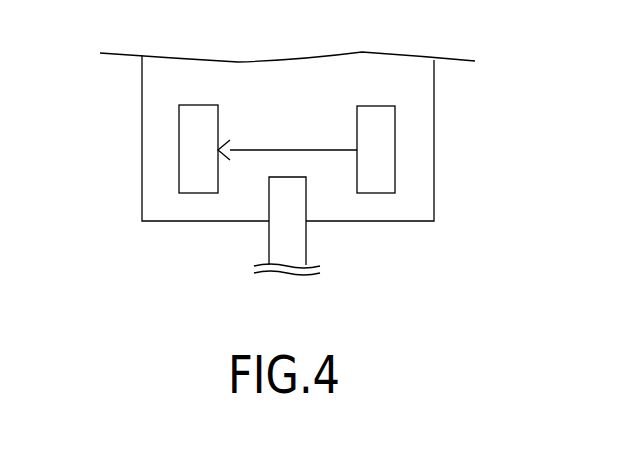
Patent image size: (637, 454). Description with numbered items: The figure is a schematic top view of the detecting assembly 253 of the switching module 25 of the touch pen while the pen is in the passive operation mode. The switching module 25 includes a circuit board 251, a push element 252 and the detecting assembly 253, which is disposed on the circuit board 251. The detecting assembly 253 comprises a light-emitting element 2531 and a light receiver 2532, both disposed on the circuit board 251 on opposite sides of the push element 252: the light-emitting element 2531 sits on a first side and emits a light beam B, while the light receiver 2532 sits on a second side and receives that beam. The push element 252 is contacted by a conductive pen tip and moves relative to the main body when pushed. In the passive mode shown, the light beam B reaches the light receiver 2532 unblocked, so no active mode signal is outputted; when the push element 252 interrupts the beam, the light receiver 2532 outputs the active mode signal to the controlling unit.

The switching module 25 is at (125, 118).
The circuit board 251 is at (343, 72).
The push element 252 is at (295, 237).
The detecting assembly 253 is at (404, 171).
The light-emitting element 2531 is at (383, 164).
The light receiver 2532 is at (200, 122).